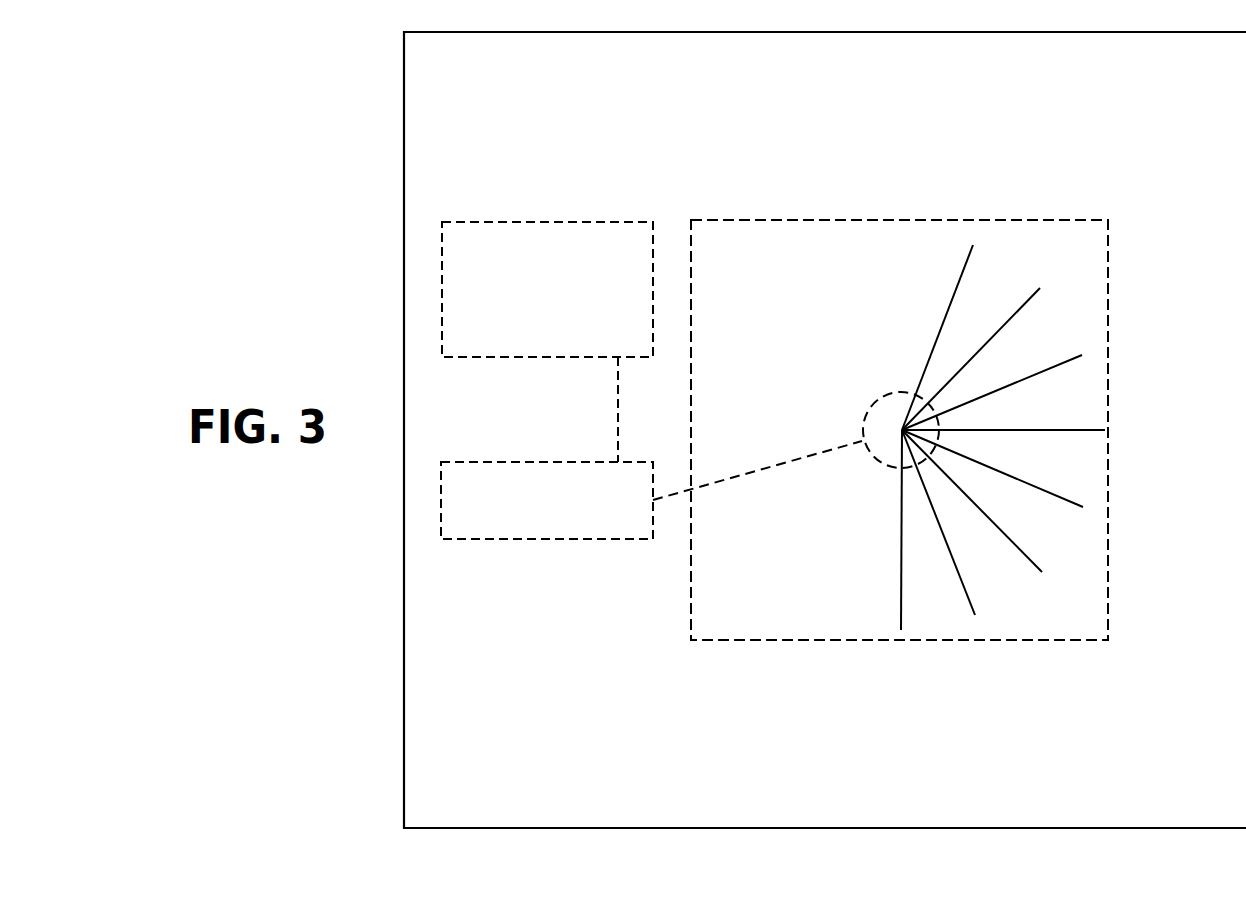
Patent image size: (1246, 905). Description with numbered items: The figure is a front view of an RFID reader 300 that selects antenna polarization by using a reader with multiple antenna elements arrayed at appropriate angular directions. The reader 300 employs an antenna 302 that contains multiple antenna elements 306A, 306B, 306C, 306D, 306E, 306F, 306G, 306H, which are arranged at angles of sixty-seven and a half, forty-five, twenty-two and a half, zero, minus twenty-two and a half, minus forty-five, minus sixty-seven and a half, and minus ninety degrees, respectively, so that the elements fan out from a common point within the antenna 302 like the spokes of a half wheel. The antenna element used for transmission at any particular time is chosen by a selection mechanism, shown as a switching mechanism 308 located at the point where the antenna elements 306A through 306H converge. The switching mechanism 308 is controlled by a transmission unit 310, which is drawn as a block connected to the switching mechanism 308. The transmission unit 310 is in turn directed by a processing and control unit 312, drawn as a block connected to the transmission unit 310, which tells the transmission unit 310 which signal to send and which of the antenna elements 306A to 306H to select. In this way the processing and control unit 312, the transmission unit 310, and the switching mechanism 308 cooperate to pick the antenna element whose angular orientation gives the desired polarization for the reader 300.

The reader 300 is at (330, 67).
The antenna 302 is at (805, 220).
The antenna element 306A is at (953, 297).
The antenna element 306B is at (1020, 302).
The antenna element 306C is at (1024, 378).
The antenna element 306D is at (1019, 428).
The antenna element 306E is at (992, 468).
The antenna element 306F is at (1002, 526).
The antenna element 306G is at (968, 588).
The antenna element 306H is at (900, 575).
The switching mechanism 308 is at (870, 410).
The transmission unit 310 is at (543, 540).
The processing and control unit 312 is at (553, 222).